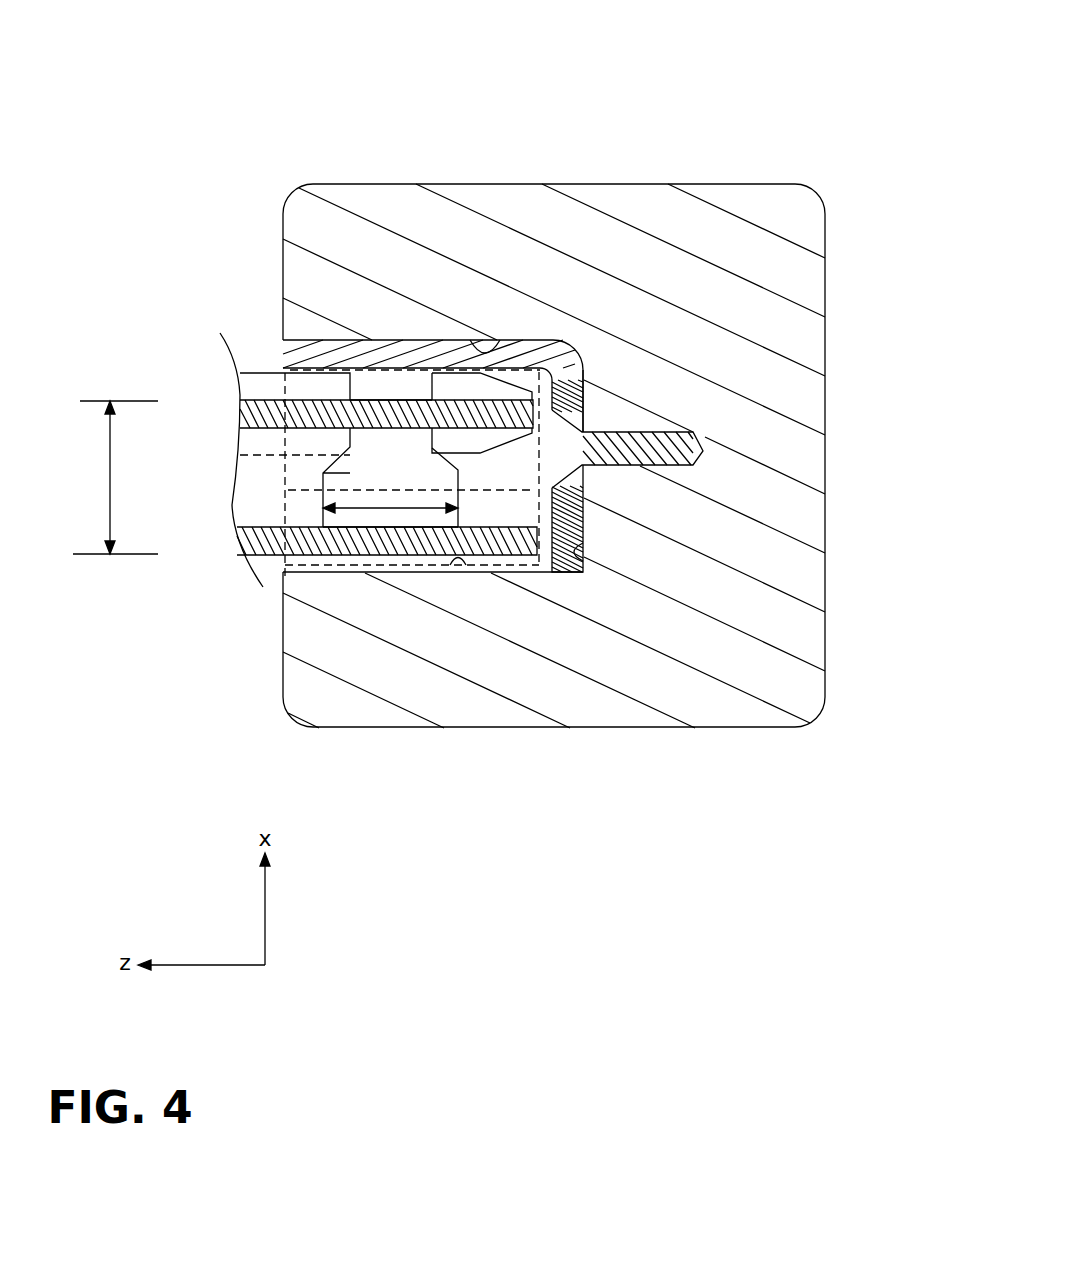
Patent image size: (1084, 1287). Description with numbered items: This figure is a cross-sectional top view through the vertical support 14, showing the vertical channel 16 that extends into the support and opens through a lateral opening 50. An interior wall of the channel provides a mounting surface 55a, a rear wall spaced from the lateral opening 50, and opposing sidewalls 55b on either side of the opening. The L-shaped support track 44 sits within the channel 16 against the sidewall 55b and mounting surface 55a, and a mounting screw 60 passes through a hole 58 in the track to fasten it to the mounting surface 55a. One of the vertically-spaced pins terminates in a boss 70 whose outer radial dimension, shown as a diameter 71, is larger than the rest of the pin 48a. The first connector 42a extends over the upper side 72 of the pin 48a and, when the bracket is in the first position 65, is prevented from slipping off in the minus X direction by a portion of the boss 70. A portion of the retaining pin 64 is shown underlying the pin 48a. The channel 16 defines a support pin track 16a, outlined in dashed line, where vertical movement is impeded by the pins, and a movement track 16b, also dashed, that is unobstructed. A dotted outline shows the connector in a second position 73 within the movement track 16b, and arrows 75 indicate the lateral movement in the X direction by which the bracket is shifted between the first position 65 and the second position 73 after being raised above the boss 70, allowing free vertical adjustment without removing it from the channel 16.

The vertical support 14 is at (665, 733).
The vertical channel 16 is at (523, 452).
The support pin track 16a is at (240, 400).
The movement track 16b is at (262, 572).
The first connector 42a is at (400, 405).
The support track 44 is at (572, 384).
The pin 48a is at (430, 468).
The lateral opening 50 is at (222, 452).
The mounting surface 55a is at (583, 555).
The sidewall 55b is at (500, 342).
The hole 58 is at (582, 483).
The mounting screw 60 is at (675, 455).
The retaining pin 64 is at (275, 390).
The first position 65 is at (515, 403).
The boss 70 is at (323, 473).
The diameter 71 is at (386, 505).
The upper side 72 is at (372, 398).
The second position 73 is at (490, 548).
The arrows 75 is at (108, 485).